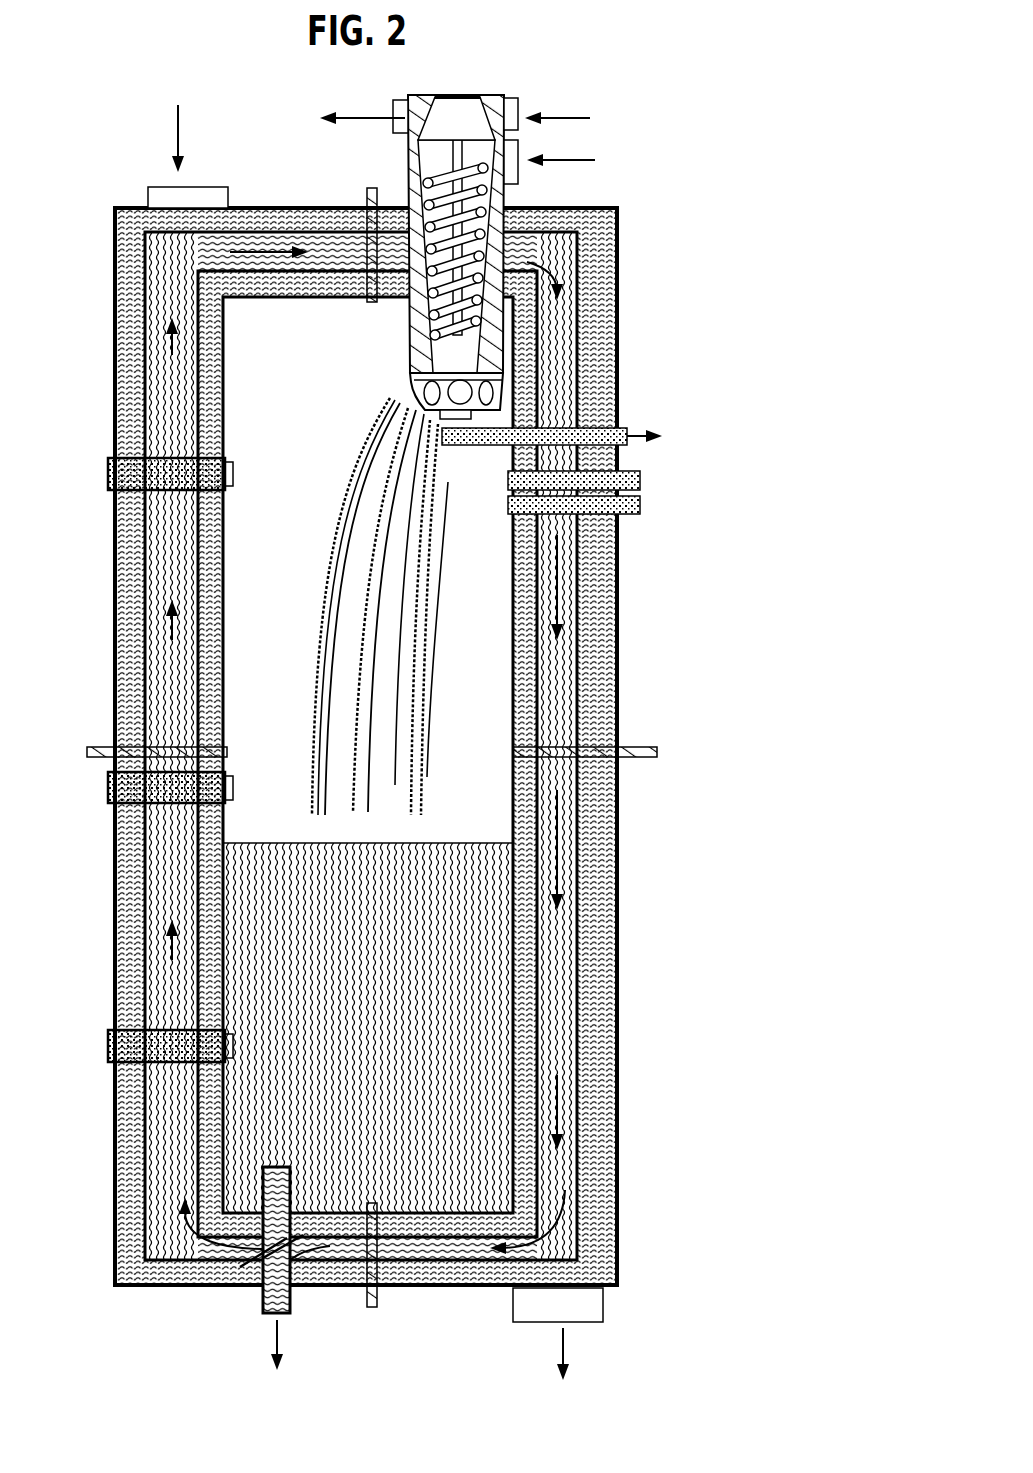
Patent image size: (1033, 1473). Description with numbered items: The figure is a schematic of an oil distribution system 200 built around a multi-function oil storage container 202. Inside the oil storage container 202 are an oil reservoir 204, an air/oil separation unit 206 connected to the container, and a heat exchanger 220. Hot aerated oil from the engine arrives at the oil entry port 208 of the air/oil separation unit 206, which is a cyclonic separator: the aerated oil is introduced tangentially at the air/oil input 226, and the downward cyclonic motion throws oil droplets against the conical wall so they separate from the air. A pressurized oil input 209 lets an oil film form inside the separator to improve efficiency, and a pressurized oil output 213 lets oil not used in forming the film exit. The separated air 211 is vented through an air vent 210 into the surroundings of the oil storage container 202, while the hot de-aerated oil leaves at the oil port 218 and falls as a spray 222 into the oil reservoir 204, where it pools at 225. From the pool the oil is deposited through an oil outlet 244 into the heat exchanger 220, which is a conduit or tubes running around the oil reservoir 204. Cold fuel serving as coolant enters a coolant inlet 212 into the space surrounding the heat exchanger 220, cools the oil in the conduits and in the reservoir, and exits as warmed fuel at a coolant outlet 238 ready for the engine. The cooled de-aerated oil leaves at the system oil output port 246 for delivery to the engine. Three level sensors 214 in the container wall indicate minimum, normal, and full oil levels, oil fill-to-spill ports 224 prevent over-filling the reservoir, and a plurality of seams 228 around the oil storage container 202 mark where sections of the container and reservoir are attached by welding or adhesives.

The oil distribution system 200 is at (648, 87).
The oil storage container 202 is at (620, 264).
The oil reservoir 204 is at (486, 702).
The air/oil separation unit 206 is at (505, 194).
The oil entry port 208 is at (526, 90).
The pressurized oil input 209 is at (583, 118).
The air vent 210 is at (560, 406).
The separated air 211 is at (583, 433).
The coolant inlet 212 is at (207, 188).
The pressurized oil output 213 is at (365, 114).
The level sensors 214 is at (108, 474).
The oil port 218 is at (406, 376).
The heat exchanger 220 is at (562, 920).
The spray stream 222 is at (336, 464).
The oil fill-to-spill ports 224 is at (632, 480).
The oil pool 225 is at (458, 1131).
The air/oil input 226 is at (571, 162).
The seams 228 is at (366, 191).
The coolant outlet 238 is at (600, 1304).
The oil outlet 244 is at (288, 1170).
The system oil output port 246 is at (293, 1305).